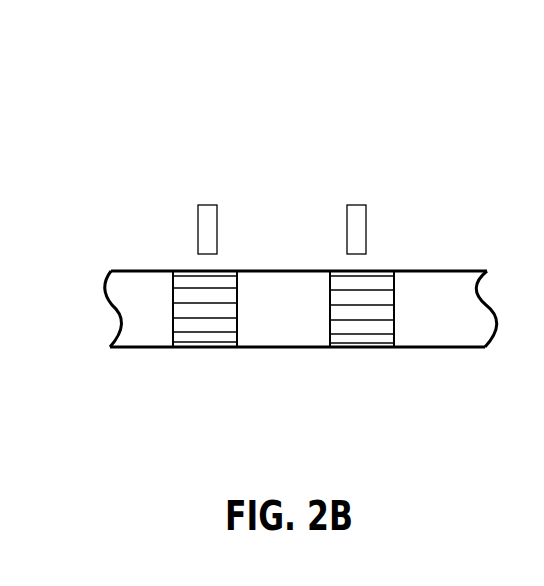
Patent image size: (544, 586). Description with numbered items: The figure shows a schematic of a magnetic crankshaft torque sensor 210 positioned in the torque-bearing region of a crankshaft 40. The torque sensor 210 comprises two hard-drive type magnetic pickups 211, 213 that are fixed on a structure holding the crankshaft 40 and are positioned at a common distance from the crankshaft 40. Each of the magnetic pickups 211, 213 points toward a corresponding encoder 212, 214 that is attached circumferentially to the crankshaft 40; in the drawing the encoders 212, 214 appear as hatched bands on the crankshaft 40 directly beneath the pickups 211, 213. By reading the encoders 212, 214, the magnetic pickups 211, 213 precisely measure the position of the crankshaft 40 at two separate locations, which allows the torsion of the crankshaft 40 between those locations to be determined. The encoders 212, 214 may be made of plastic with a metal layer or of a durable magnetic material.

The magnetic crankshaft torque sensor 210 is at (124, 58).
The crankshaft 40 is at (457, 271).
The magnetic pickup 211 is at (217, 205).
The encoder 212 is at (237, 315).
The magnetic pickup 213 is at (366, 205).
The encoder 214 is at (394, 305).